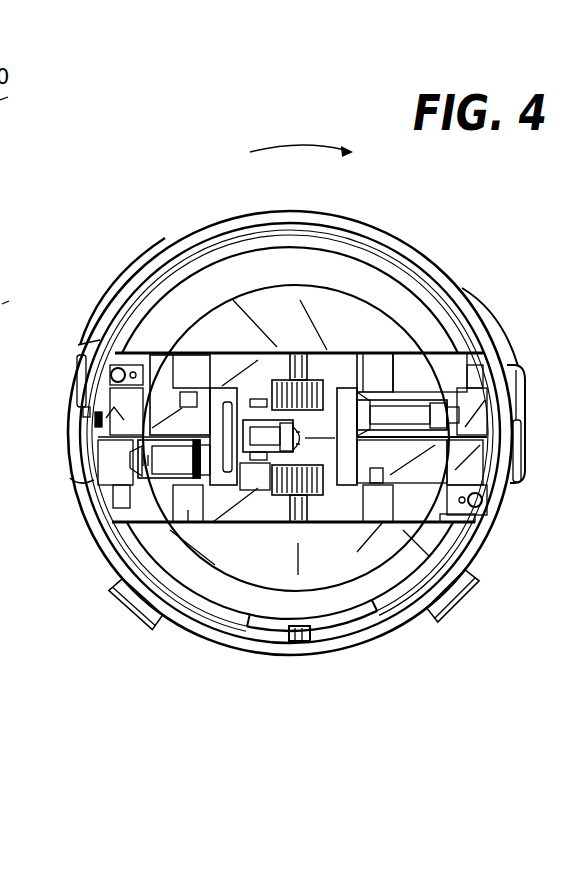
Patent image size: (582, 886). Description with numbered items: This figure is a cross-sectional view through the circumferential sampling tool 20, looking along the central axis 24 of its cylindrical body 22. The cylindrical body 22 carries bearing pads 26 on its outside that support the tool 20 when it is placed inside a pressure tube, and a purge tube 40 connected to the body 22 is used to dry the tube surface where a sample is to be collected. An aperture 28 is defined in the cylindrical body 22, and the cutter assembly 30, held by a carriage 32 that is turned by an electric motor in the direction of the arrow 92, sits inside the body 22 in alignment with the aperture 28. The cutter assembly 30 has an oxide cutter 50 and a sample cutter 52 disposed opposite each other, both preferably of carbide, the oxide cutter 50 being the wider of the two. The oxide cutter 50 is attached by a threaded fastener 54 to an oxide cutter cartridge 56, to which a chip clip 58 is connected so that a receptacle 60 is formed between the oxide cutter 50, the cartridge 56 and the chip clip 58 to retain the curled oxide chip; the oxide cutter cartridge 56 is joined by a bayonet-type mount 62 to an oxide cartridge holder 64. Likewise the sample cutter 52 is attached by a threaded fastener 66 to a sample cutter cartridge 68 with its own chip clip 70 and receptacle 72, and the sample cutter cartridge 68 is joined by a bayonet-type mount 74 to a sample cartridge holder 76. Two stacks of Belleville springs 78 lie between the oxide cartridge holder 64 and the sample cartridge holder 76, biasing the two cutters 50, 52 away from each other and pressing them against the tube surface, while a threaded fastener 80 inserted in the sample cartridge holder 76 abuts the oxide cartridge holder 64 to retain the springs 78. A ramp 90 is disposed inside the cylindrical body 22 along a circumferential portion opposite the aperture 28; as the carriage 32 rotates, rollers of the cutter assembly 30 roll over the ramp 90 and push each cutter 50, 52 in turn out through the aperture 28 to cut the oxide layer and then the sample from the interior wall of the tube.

The circumferential sampling tool 20 is at (339, 98).
The cylindrical body 22 is at (291, 643).
The central axis 24 is at (400, 625).
The bearing pads 26 is at (135, 612).
The aperture 28 is at (353, 231).
The cutter assembly 30 is at (214, 326).
The carriage 32 is at (355, 618).
The purge tube 40 is at (449, 265).
The oxide cutter 50 is at (70, 476).
The sample cutter 52 is at (465, 280).
The threaded fastener 54 is at (250, 523).
The oxide cutter cartridge 56 is at (105, 518).
The chip clip 58 is at (80, 362).
The receptacle 60 is at (68, 425).
The bayonet-type mount 62 is at (127, 321).
The oxide cartridge holder 64 is at (222, 353).
The threaded fastener 66 is at (412, 300).
The sample cutter cartridge 68 is at (493, 533).
The chip clip 70 is at (521, 433).
The receptacle 72 is at (500, 327).
The bayonet-type mount 74 is at (428, 348).
The sample cartridge holder 76 is at (332, 271).
The Belleville springs 78 is at (283, 353).
The threaded fastener 80 is at (175, 300).
The ramp 90 is at (207, 607).
The arrow 92 is at (300, 148).